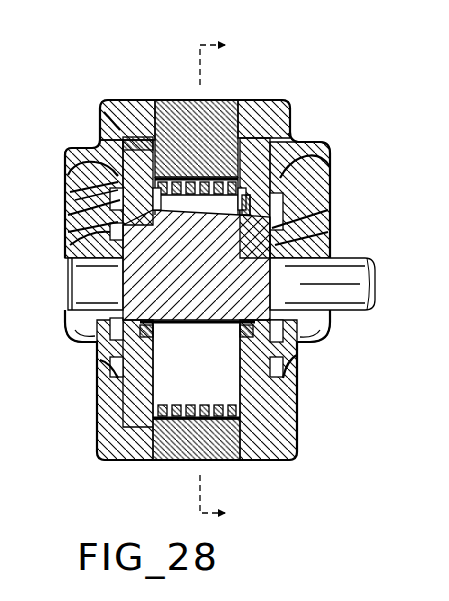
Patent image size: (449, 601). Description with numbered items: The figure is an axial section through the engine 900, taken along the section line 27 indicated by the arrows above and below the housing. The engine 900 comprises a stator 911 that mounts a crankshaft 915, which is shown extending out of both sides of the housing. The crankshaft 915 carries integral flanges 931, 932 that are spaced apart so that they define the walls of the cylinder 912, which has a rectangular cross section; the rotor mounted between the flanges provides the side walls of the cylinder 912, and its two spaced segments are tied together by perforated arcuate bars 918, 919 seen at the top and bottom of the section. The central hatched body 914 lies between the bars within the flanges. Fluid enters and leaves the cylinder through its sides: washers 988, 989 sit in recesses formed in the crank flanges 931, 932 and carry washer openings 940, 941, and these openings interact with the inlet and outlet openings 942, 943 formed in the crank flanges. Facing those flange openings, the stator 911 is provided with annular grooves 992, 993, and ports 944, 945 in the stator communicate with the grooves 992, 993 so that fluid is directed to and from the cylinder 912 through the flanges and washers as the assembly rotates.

The section line 27- 27 is at (232, 277).
The engine 900 is at (112, 97).
The stator 911 is at (285, 103).
The cylinder 912 is at (121, 403).
The central shaft body 914 is at (195, 291).
The crankshaft 915 is at (80, 270).
The perforated arcuate bar 918 is at (225, 204).
The perforated arcuate bar 919 is at (185, 404).
The crank flange 931 is at (101, 110).
The crank flange 932 is at (296, 136).
The washer opening 940 is at (255, 330).
The washer opening 941 is at (244, 218).
The inlet and outlet opening 942 is at (76, 190).
The inlet and outlet opening 943 is at (146, 338).
The port 944 is at (82, 186).
The port 945 is at (85, 240).
The washer 988 is at (90, 336).
The washer 989 is at (302, 338).
The annular groove 992 is at (92, 145).
The annular groove 993 is at (74, 204).